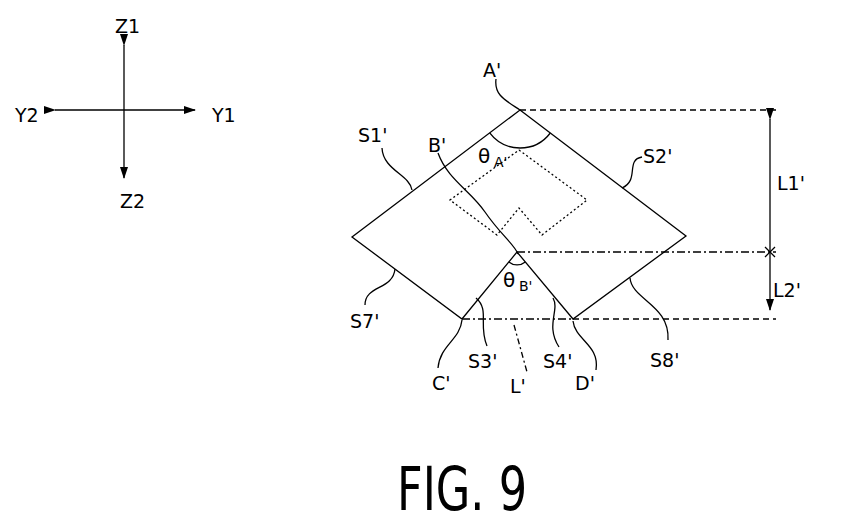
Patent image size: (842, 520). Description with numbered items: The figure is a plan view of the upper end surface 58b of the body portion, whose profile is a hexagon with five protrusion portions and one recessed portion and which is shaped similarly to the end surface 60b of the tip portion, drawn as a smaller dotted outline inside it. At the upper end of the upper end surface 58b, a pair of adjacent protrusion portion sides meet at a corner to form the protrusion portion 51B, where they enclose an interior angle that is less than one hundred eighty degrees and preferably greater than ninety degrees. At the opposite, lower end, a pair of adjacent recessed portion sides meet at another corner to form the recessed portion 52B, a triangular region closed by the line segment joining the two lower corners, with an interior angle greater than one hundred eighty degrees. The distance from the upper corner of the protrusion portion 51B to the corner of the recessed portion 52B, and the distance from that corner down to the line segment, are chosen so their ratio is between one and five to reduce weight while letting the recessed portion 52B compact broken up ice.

The protrusion portion 51B is at (524, 96).
The recessed portion 52B is at (527, 318).
The upper end surface 58b is at (678, 78).
The end surface 60b is at (550, 170).